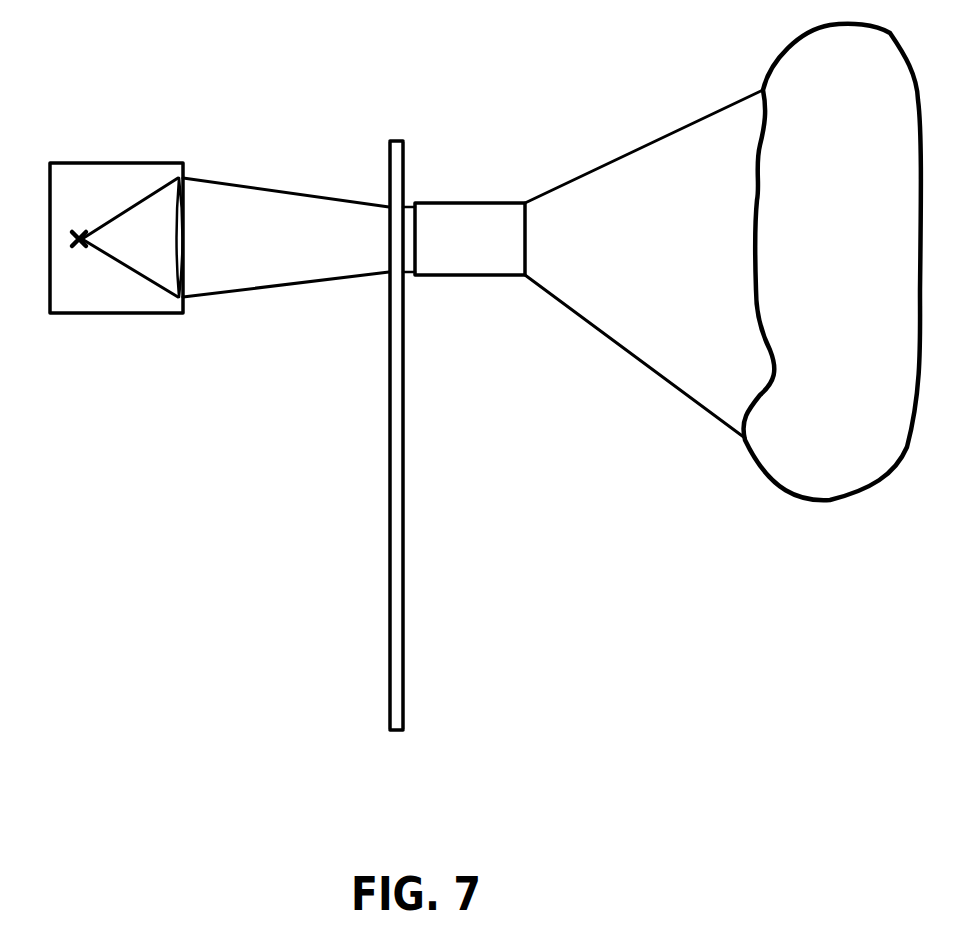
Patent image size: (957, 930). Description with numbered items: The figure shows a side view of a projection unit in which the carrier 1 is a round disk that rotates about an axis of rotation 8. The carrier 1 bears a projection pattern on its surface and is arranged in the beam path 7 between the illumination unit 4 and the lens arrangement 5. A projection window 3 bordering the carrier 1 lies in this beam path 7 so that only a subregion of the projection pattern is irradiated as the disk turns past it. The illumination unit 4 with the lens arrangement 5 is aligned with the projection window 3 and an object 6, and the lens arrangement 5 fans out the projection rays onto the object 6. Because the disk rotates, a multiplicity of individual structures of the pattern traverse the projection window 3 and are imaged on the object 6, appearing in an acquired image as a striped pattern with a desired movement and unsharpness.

The carrier 1 is at (393, 735).
The projection window 3 is at (388, 219).
The illumination unit 4 is at (127, 313).
The lens arrangement 5 is at (469, 275).
The object 6 is at (822, 500).
The beam path 7 is at (253, 292).
The axis of rotation 8 is at (418, 438).